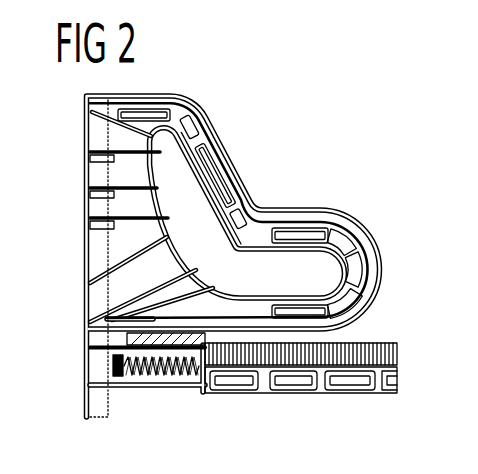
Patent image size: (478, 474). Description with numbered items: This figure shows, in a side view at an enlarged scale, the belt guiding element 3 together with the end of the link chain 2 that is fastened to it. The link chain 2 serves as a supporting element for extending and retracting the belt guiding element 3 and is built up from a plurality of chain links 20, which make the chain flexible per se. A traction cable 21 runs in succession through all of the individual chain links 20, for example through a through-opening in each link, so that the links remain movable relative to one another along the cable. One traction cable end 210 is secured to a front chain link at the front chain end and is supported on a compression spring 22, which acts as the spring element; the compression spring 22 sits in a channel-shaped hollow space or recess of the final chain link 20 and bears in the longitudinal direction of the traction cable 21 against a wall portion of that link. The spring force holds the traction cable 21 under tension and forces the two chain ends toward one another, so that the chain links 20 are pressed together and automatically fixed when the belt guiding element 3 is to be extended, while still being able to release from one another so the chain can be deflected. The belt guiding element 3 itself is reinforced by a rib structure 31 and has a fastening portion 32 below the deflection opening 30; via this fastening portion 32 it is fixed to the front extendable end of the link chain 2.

The link chain 2 is at (388, 343).
The belt guiding element 3 is at (250, 146).
The chain links 20 is at (328, 394).
The traction cable 21 is at (203, 391).
The compression spring 22 is at (143, 391).
The deflection opening 30 is at (248, 237).
The rib structure 31 is at (100, 184).
The fastening portion 32 is at (178, 388).
The traction cable end 210 is at (111, 358).